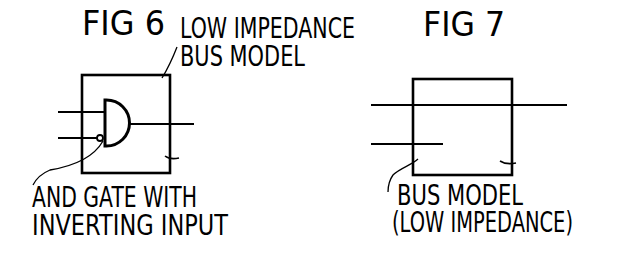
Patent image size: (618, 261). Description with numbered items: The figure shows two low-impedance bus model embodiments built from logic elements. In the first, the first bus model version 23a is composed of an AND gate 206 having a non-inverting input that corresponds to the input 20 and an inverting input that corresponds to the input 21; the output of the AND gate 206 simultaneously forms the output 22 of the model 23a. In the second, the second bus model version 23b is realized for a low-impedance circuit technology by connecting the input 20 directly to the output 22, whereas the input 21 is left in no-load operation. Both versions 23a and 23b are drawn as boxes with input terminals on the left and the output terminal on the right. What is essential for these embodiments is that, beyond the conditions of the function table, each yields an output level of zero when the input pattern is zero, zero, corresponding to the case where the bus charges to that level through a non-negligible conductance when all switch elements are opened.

In FIG. 6, the input 20 is at (65, 110).
In FIG. 7, the input 20 is at (452, 105).
In FIG. 6, the input 21 is at (64, 140).
In FIG. 7, the input 21 is at (391, 145).
In FIG. 6, the output 22 is at (177, 125).
In FIG. 7, the output 22 is at (556, 105).
In FIG. 6, the AND gate 206 is at (131, 113).
In FIG. 6, the first bus model version 23a is at (187, 164).
In FIG. 7, the second bus model version 23b is at (527, 167).